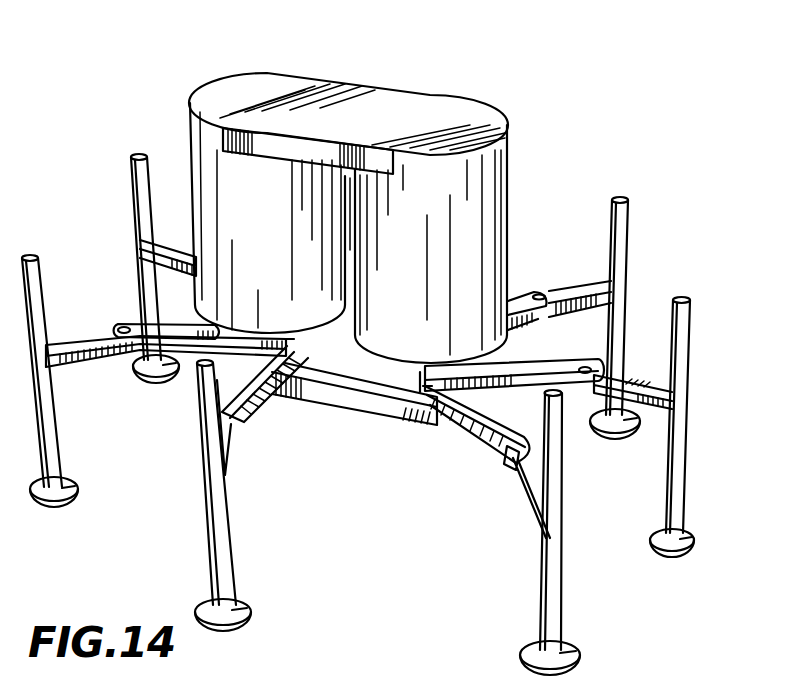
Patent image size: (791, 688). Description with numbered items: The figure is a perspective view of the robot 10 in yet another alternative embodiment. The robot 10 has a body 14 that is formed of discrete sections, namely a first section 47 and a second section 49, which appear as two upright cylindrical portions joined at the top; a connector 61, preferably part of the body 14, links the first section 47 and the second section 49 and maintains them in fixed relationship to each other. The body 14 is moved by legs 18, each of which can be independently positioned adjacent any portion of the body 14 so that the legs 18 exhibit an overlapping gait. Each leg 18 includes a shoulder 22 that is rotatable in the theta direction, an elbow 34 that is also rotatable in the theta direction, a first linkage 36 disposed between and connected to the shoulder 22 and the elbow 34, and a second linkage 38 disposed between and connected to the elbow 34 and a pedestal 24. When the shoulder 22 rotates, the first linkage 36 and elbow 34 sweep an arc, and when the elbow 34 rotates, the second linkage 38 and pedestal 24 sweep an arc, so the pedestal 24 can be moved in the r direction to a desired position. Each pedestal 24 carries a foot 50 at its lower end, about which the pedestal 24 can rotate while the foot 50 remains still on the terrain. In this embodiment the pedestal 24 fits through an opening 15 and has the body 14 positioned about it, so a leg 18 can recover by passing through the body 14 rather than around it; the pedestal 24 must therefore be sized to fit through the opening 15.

The robot 10 is at (533, 74).
The body 14 is at (286, 66).
The opening 15 is at (355, 240).
The leg 18 is at (684, 516).
The shoulder 22 is at (289, 342).
The pedestal 24 is at (138, 170).
The elbow 34 is at (122, 329).
The first linkage 36 is at (193, 346).
The second linkage 38 is at (55, 353).
The first section 47 is at (269, 238).
The second section 49 is at (407, 312).
The foot 50 is at (252, 600).
The connector 61 is at (365, 400).